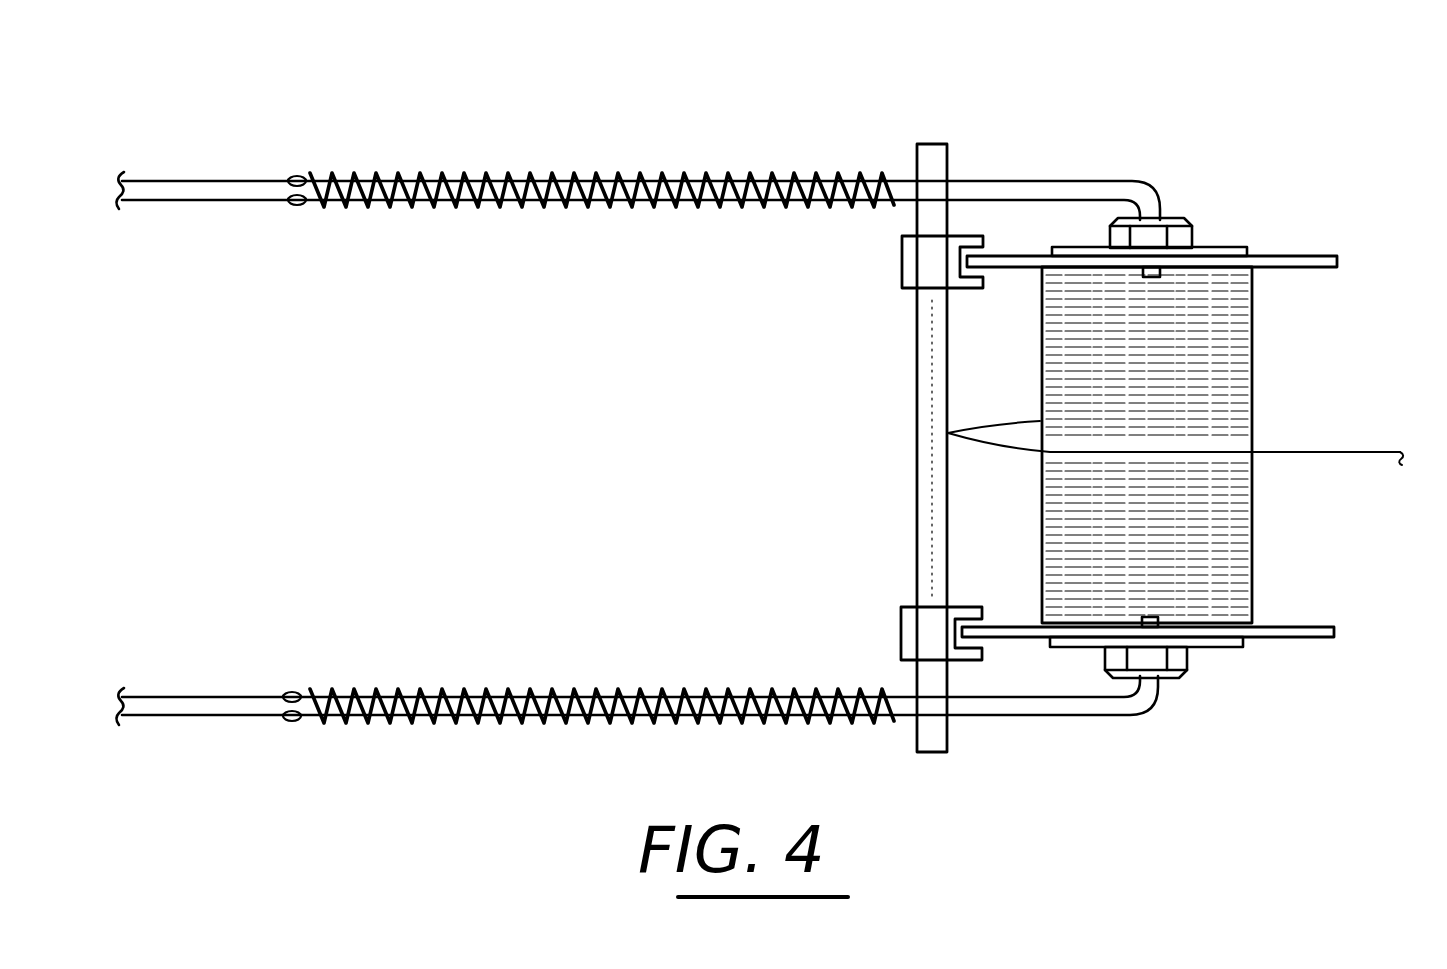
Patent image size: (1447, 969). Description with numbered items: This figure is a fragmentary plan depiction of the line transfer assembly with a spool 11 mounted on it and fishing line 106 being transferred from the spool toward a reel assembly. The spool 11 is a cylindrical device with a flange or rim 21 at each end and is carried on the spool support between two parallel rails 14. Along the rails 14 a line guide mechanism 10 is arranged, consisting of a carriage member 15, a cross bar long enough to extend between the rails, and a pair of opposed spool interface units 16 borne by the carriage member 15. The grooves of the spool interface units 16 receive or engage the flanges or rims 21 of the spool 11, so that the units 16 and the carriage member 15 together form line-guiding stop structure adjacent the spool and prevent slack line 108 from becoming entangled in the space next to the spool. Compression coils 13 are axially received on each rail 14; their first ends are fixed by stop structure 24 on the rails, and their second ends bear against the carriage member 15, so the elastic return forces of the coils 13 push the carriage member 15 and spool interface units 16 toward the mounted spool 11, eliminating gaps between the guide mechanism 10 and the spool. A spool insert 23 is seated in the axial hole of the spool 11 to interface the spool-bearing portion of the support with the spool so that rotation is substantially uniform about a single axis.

The line guide mechanism 10 is at (948, 122).
The spool 11 is at (1310, 258).
The compression coils 13 is at (556, 180).
The parallel rails 14 is at (213, 192).
The carriage member 15 is at (917, 448).
The spool interface units 16 is at (905, 270).
The flanges or rims 21 is at (1340, 258).
The spool insert 23 is at (1193, 216).
The stop structure 24 is at (297, 207).
The fishing line 106 is at (1281, 452).
The slack line 108 is at (997, 449).